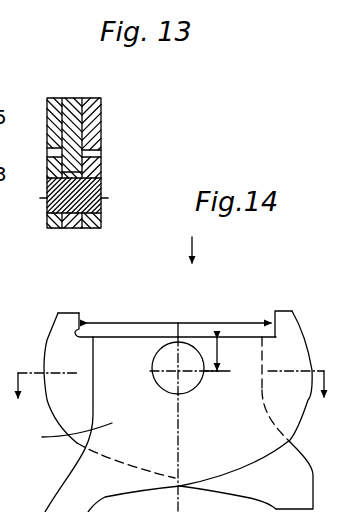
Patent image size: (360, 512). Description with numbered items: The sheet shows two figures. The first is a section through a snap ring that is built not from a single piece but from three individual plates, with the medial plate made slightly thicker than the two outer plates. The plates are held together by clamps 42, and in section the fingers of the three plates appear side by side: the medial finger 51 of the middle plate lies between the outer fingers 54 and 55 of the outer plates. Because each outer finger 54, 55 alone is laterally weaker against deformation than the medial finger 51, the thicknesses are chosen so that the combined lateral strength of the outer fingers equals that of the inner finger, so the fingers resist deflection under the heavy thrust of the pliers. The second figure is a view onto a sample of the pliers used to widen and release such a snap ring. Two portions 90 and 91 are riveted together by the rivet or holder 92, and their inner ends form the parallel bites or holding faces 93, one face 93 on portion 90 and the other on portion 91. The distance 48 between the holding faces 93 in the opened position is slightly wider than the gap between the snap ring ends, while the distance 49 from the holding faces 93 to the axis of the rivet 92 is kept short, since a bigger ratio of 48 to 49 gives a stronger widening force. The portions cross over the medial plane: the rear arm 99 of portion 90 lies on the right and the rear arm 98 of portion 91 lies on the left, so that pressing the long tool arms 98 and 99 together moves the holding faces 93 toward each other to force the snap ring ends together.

In FIG. 13, the clamps 42 is at (98, 190).
In FIG. 13, the medial finger 51 is at (72, 99).
In FIG. 13, the outer finger 54 is at (94, 128).
In FIG. 13, the outer finger 55 is at (47, 106).
In FIG. 14, the distance between holding faces 48 is at (139, 328).
In FIG. 14, the distance of holding faces from rivet axis 49 is at (227, 354).
In FIG. 14, the portion 90 is at (56, 349).
In FIG. 14, the portion 91 is at (297, 282).
In FIG. 14, the rivet or holder 92 is at (165, 382).
In FIG. 14, the holding faces 93 is at (81, 313).
In FIG. 14, the tool arm 98 is at (60, 488).
In FIG. 14, the tool arm 99 is at (279, 498).